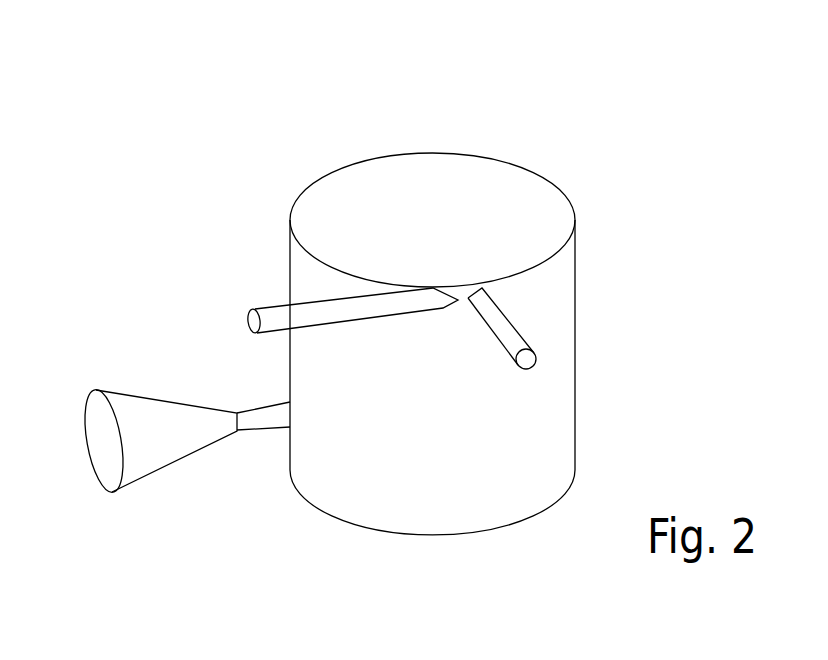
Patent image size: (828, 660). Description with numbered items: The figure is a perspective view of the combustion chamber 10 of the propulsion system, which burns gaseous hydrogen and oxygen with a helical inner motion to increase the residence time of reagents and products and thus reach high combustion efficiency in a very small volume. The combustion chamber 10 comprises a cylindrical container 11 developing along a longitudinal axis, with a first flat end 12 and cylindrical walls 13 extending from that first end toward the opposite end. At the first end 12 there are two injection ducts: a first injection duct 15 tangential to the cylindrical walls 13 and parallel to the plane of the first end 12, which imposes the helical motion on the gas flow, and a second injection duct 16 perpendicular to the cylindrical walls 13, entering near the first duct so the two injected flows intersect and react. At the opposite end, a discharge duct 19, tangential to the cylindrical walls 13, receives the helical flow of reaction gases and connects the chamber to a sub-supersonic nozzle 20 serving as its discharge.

The combustion chamber 10 is at (243, 185).
The cylindrical container 11 is at (457, 547).
The first flat end 12 is at (408, 217).
The cylindrical walls 13 is at (390, 410).
The first injection duct 15 is at (505, 323).
The second injection duct 16 is at (273, 315).
The discharge duct 19 is at (268, 417).
The sub-supersonic nozzle 20 is at (130, 420).